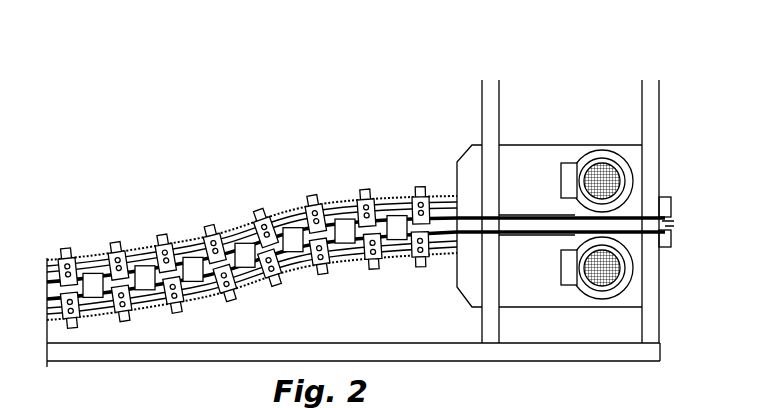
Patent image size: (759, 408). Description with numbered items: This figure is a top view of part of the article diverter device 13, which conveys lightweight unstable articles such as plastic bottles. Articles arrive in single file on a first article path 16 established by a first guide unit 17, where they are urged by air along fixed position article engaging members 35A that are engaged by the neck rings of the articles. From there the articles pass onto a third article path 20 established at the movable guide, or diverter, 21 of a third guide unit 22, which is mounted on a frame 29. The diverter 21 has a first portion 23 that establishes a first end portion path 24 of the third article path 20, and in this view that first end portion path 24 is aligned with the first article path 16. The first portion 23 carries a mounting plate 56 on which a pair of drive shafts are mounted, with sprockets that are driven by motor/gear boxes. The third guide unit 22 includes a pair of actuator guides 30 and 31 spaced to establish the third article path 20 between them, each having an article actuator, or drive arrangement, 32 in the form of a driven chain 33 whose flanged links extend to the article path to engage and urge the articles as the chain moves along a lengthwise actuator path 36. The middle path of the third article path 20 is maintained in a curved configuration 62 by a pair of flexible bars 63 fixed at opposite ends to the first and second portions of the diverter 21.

The device 13 is at (312, 78).
The third guide unit 22 is at (430, 128).
The frame 29 is at (473, 353).
The mounting plate 56 is at (543, 145).
The first guide unit 17 is at (672, 203).
The first article path 16 is at (665, 220).
The article engaging members 35A is at (672, 245).
The first portion 23 is at (633, 212).
The first end portion path 24 is at (633, 227).
The actuator path 36 is at (87, 253).
The third article path 20 is at (130, 280).
The movable guide 21 is at (145, 247).
The actuator guide 30 is at (213, 220).
The article actuator 32 is at (280, 210).
The driven chain 33 is at (332, 203).
The flexible bars 63 is at (350, 203).
The curved configuration 62 is at (155, 310).
The actuator guide 31 is at (233, 310).